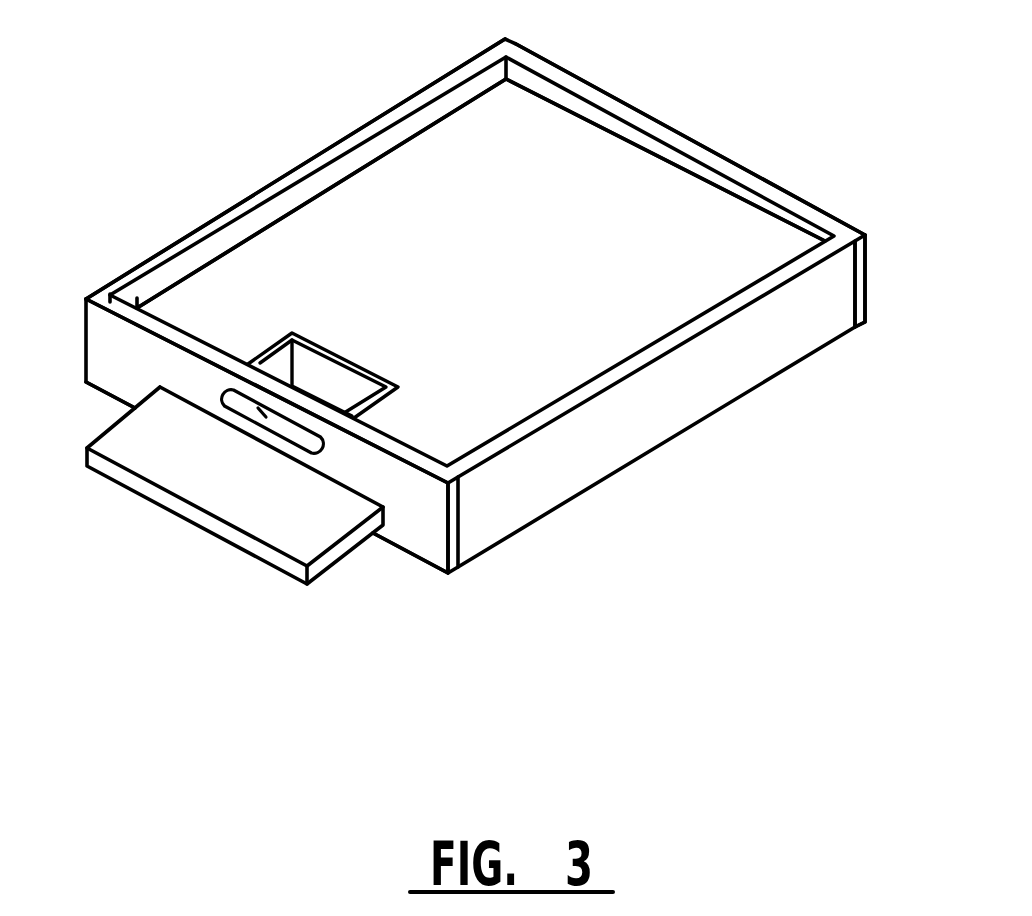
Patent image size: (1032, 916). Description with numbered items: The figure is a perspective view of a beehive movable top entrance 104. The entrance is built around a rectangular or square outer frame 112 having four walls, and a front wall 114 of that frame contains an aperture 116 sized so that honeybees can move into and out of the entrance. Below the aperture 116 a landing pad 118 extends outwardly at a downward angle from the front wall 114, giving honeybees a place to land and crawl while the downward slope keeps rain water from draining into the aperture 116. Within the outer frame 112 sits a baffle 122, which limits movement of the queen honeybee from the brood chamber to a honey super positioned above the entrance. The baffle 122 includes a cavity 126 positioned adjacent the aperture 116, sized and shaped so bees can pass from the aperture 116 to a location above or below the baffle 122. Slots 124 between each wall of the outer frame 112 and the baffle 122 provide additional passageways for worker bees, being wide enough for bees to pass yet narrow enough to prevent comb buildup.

The movable top entrance 104 is at (778, 124).
The outer frame 112 is at (863, 275).
The front wall 114 is at (427, 545).
The aperture 116 is at (227, 388).
The landing pad 118 is at (342, 547).
The baffle 122 is at (582, 270).
The slots 124 is at (321, 186).
The cavity 126 is at (312, 378).